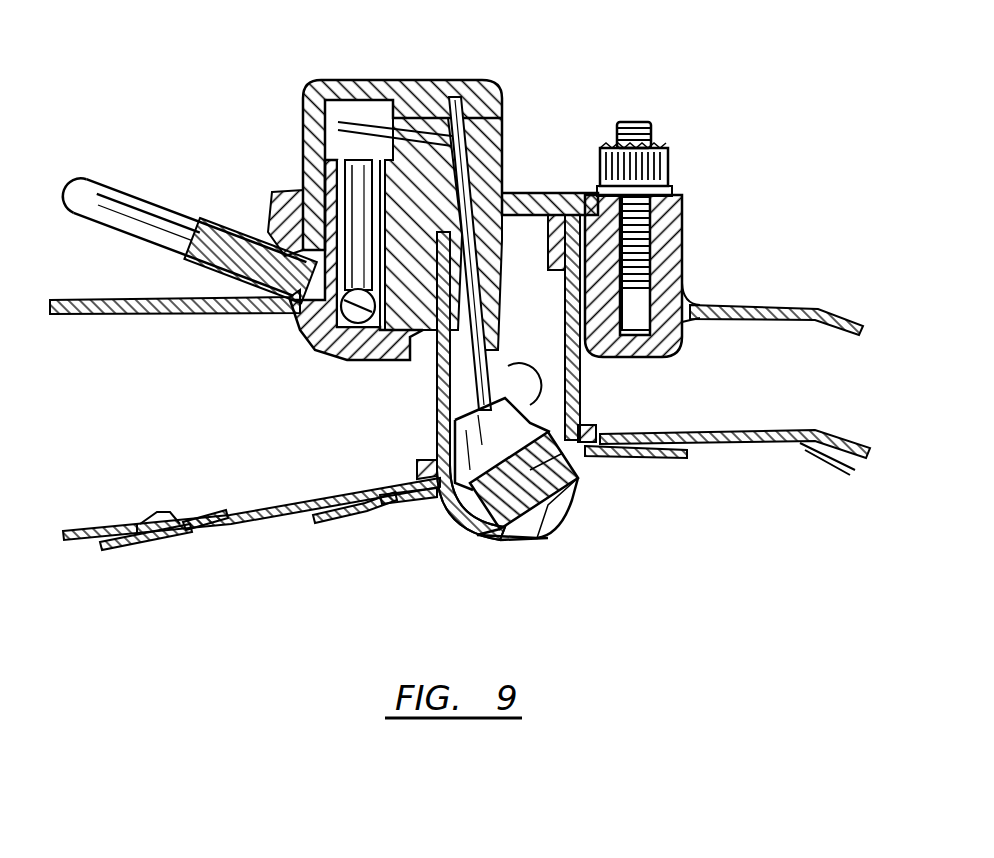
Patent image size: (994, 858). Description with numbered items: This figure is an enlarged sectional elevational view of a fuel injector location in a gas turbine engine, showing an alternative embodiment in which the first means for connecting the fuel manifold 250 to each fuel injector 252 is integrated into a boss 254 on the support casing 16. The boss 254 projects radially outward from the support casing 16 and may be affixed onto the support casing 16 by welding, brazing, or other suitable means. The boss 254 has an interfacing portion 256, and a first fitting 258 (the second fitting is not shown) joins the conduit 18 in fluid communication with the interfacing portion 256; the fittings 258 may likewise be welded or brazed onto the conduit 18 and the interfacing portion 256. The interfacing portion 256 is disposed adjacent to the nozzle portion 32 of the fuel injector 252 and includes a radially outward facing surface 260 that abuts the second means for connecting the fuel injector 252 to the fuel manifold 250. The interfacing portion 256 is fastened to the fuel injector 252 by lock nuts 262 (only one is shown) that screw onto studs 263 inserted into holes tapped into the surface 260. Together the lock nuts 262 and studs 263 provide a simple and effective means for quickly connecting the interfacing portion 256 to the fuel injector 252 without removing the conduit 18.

The fuel injector 252 is at (426, 62).
The fuel manifold 250 is at (184, 193).
The radially outward facing surface 260 is at (292, 203).
The conduit 18 is at (108, 230).
The first fitting 258 is at (206, 264).
The boss 254 is at (330, 352).
The support casing 16 is at (108, 316).
The interfacing portion 256 is at (412, 368).
The nozzle portion 32 is at (445, 408).
The lock nut 262 is at (668, 150).
The stud 263 is at (640, 122).